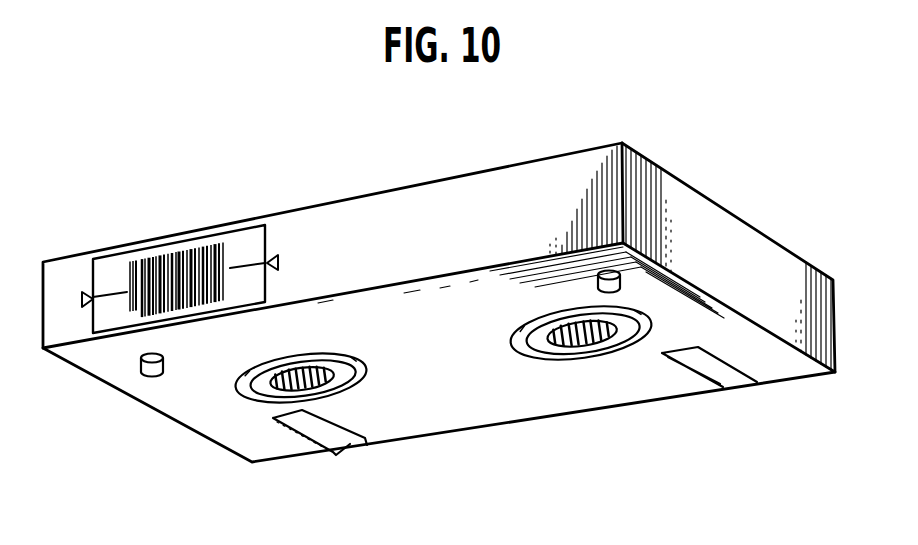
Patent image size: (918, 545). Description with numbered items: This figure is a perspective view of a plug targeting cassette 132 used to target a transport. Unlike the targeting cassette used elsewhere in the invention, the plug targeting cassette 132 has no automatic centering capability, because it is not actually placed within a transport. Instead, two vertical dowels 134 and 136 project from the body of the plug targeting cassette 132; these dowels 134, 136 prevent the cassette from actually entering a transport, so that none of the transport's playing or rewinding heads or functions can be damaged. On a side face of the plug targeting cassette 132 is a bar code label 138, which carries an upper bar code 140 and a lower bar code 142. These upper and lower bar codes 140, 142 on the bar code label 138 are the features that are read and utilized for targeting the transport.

The plug targeting cassette 132 is at (566, 180).
The vertical dowel 134 is at (141, 364).
The vertical dowel 136 is at (620, 280).
The bar code label 138 is at (176, 243).
The upper bar code 140 is at (230, 247).
The lower bar code 142 is at (128, 285).